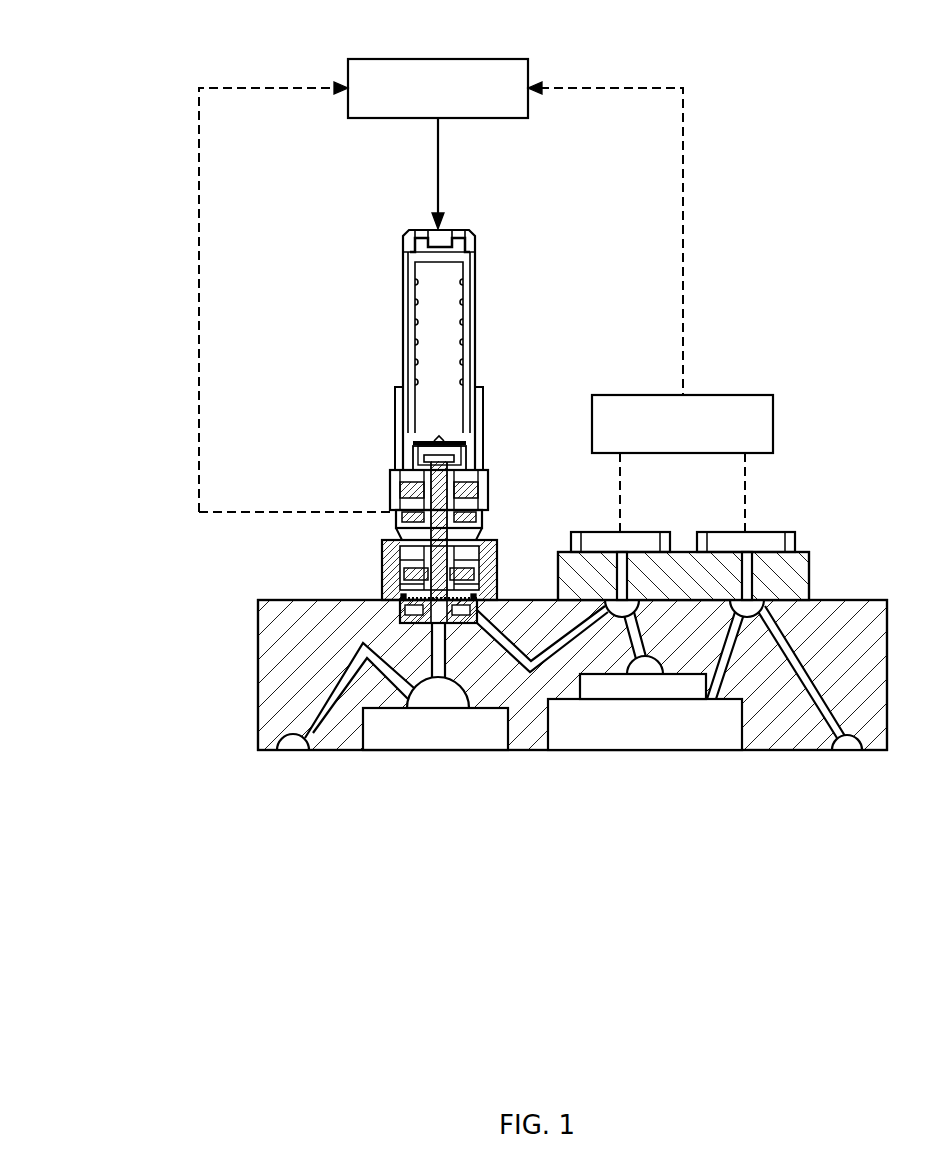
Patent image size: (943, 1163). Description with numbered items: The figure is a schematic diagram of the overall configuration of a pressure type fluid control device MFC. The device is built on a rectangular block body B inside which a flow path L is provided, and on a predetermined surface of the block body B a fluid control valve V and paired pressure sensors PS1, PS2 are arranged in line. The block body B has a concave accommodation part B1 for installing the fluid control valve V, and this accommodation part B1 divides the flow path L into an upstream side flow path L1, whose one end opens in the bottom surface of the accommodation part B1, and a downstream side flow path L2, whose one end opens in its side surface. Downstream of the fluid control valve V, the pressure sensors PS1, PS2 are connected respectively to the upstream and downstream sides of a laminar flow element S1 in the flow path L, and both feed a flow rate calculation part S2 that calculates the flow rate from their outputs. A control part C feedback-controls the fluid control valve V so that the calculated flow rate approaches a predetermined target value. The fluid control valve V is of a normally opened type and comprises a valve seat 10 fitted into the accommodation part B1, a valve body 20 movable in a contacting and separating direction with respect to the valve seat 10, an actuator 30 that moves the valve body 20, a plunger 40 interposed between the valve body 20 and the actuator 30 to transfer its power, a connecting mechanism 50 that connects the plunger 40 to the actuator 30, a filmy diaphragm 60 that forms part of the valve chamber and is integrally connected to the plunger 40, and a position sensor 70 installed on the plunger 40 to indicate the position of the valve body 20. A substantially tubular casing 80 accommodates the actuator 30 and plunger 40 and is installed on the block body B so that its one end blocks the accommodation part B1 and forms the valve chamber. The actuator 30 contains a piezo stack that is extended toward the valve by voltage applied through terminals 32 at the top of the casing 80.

The control part C is at (528, 59).
The fluid control device MFC is at (165, 82).
The fluid control valve V is at (508, 232).
The terminals 32 is at (427, 232).
The actuator 30 is at (463, 312).
The casing 80 is at (396, 393).
The connecting mechanism 50 is at (480, 437).
The position sensor 70 is at (487, 476).
The plunger 40 is at (402, 528).
The diaphragm 60 is at (496, 560).
The valve body 20 is at (497, 588).
The valve seat 10 is at (402, 615).
The accommodation part B1 is at (399, 606).
The block body B is at (572, 721).
The flow path L is at (456, 724).
The upstream side flow path L1 is at (445, 690).
The downstream side flow path L2 is at (522, 672).
The laminar flow element S1 is at (651, 752).
The flow rate calculation part S2 is at (773, 425).
The pressure sensor PS1 is at (582, 531).
The pressure sensor PS2 is at (786, 531).